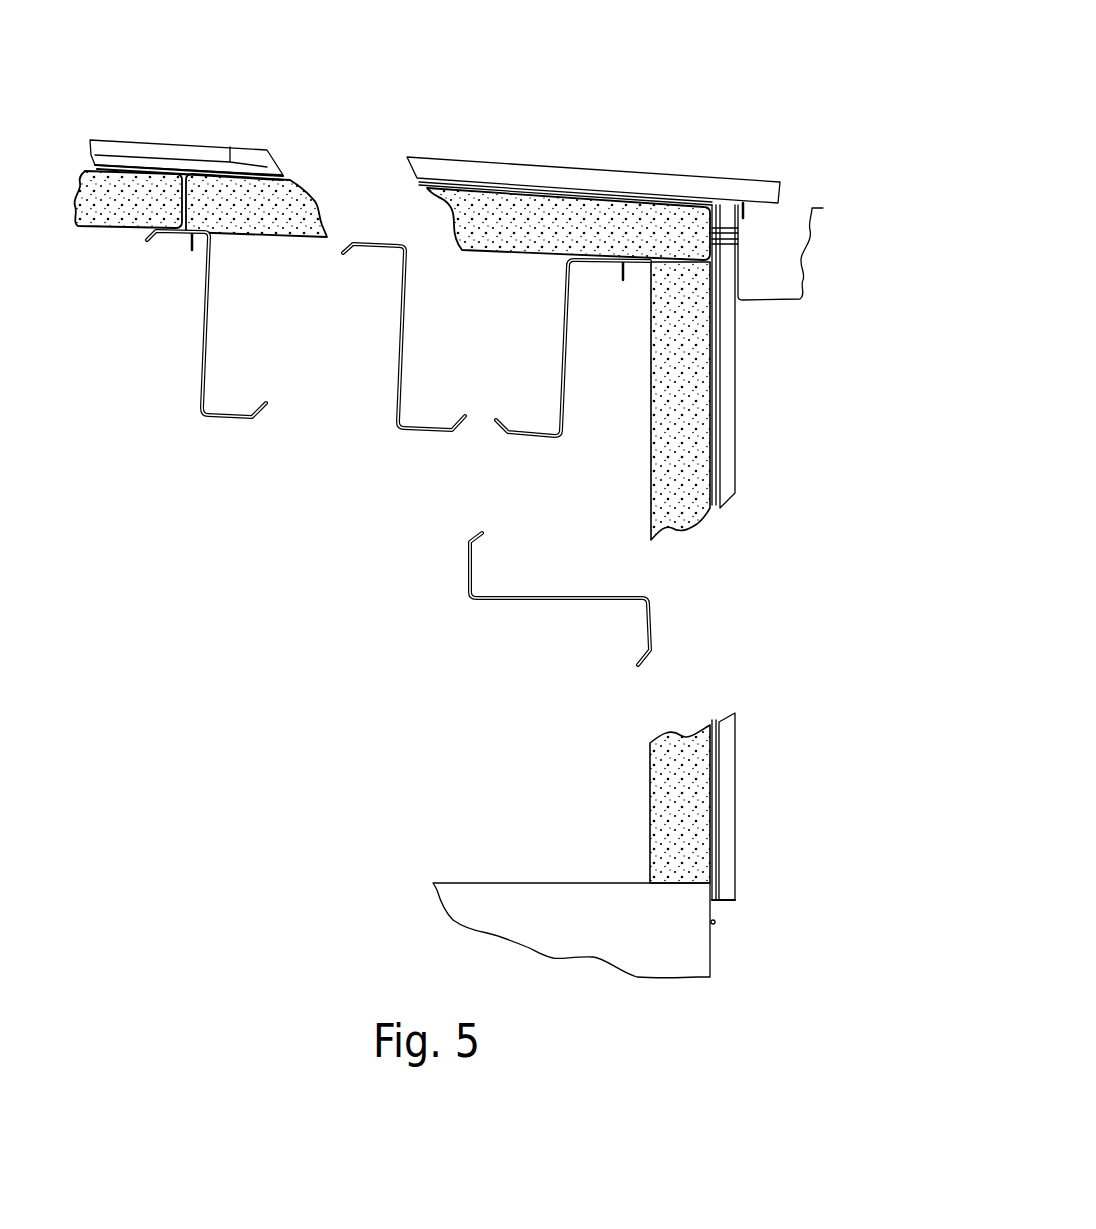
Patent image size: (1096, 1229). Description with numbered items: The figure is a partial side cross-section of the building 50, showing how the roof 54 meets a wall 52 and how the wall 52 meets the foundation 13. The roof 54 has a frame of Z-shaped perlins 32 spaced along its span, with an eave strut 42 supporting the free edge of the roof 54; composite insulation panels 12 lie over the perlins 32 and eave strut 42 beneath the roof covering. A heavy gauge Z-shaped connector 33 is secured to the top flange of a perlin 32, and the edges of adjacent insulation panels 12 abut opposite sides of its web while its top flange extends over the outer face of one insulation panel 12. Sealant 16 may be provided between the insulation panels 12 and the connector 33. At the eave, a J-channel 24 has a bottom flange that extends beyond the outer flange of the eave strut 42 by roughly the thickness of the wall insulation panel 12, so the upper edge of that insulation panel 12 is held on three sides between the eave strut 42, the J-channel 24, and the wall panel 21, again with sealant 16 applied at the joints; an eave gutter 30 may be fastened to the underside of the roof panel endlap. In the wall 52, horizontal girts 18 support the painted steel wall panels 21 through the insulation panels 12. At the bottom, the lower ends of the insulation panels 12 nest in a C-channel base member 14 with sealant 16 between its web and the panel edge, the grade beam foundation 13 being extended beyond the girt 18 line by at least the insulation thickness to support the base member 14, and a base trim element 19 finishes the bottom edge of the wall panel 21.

The building 50 is at (792, 88).
The panel lap or ridge cap connector 33 is at (203, 170).
The insulation panel 12 is at (424, 214).
The roof 54 is at (548, 142).
The J-channel 24 is at (687, 200).
The eave gutter 30 is at (825, 208).
The wall 52 is at (778, 358).
The wall panel 21 is at (735, 441).
The perlin 32 is at (207, 322).
The eave strut 42 is at (568, 346).
The girt 18 is at (525, 598).
The sealant 16 is at (685, 695).
The base member 14 is at (648, 843).
The base trim element 19 is at (714, 921).
The foundation 13 is at (697, 968).